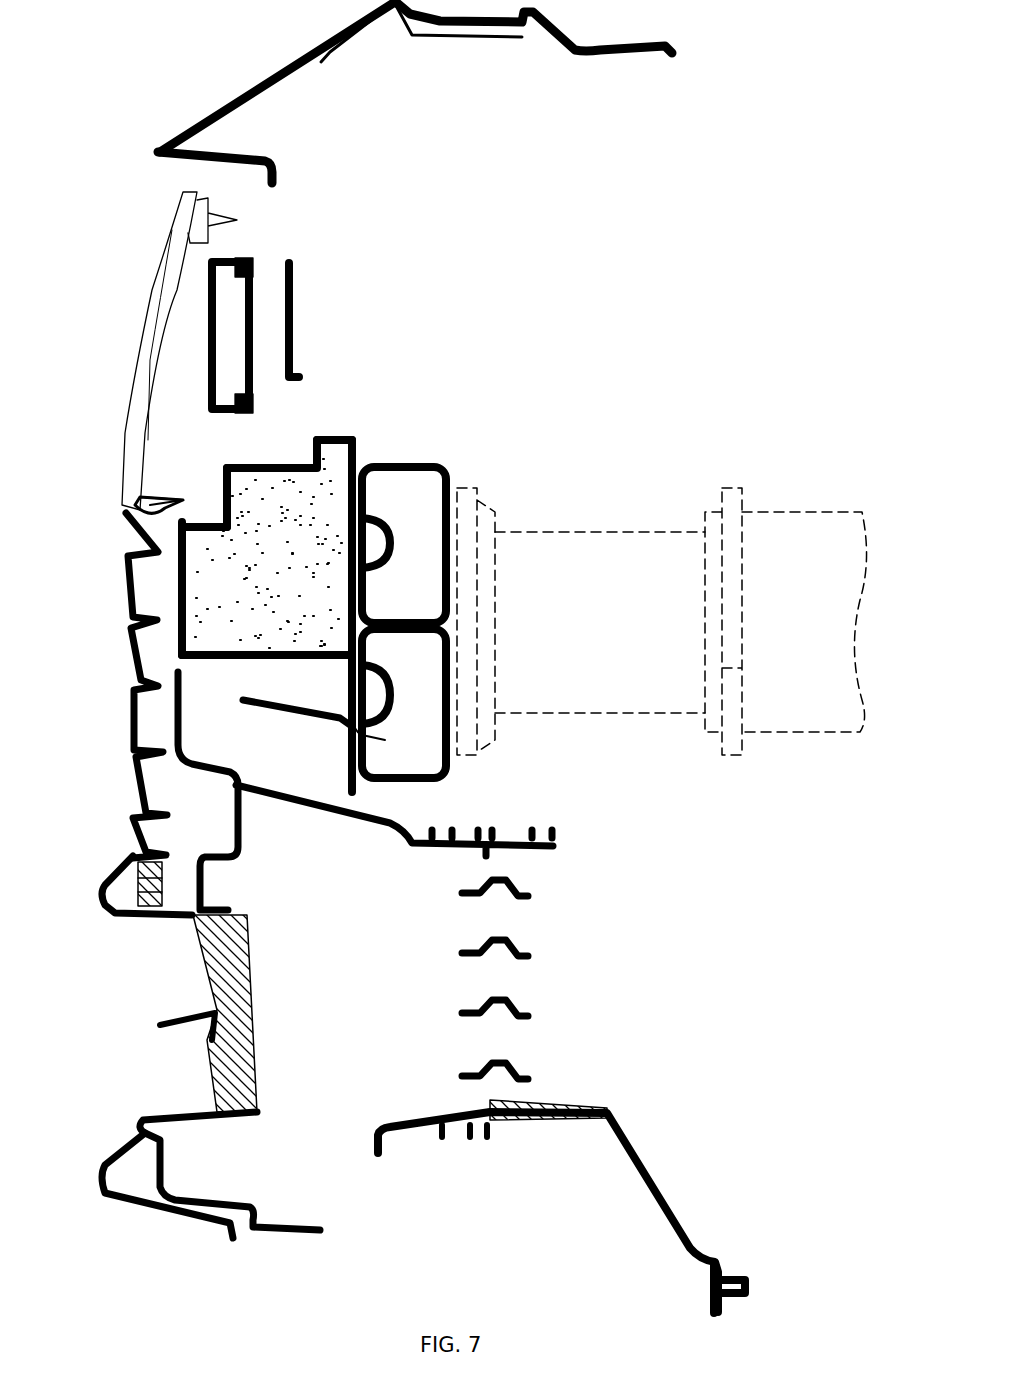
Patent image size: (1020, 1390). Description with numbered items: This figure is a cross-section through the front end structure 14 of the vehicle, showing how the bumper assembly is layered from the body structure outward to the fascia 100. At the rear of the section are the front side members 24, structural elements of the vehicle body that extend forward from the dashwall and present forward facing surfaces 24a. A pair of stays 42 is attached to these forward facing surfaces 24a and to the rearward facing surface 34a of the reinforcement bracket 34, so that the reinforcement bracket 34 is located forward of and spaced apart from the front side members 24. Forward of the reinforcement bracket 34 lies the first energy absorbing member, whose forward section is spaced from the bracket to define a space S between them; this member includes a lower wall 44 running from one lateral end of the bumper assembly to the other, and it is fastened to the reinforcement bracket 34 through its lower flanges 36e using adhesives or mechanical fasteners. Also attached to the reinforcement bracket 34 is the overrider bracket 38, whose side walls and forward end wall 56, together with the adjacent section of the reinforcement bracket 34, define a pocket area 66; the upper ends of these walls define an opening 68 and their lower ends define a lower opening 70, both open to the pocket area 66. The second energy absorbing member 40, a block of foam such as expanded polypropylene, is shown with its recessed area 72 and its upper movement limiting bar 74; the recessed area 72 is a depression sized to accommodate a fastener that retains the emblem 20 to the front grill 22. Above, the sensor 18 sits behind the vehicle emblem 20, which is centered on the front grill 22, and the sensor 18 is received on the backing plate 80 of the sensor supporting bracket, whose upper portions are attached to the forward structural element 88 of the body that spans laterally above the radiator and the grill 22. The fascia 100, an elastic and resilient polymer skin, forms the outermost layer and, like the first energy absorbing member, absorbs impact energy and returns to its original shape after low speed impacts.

The vehicle front end structure 14 is at (150, 33).
The forward structural element 88 is at (438, 42).
The vehicle emblem 20 is at (155, 292).
The sensor 18 is at (230, 345).
The backing plate 80 is at (293, 306).
The front grill 22 is at (130, 593).
The opening 68 is at (172, 490).
The second energy absorbing member 40 is at (274, 510).
The recessed area 72 is at (222, 488).
The upper movement limiting bar 74 is at (358, 445).
The forward end wall 56 is at (175, 580).
The overrider bracket 38 is at (177, 622).
The lower opening 70 is at (178, 656).
The pocket area 66 is at (195, 620).
The reinforcement bracket 34 is at (413, 460).
The rearward facing surface 34a is at (452, 530).
The stays 42 is at (597, 577).
The forward facing surfaces 24a is at (733, 668).
The front side members 24 is at (801, 560).
The lower wall 44 is at (287, 706).
The lower flanges 36e is at (347, 752).
The space S is at (250, 733).
The fascia 100 is at (178, 1110).